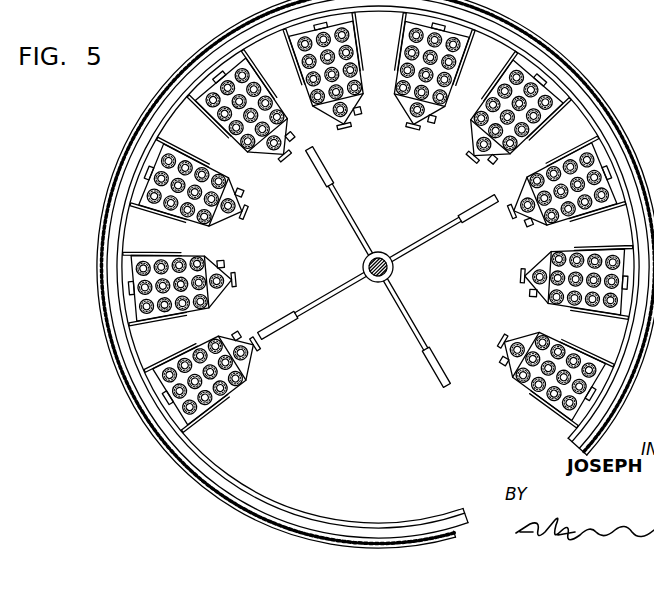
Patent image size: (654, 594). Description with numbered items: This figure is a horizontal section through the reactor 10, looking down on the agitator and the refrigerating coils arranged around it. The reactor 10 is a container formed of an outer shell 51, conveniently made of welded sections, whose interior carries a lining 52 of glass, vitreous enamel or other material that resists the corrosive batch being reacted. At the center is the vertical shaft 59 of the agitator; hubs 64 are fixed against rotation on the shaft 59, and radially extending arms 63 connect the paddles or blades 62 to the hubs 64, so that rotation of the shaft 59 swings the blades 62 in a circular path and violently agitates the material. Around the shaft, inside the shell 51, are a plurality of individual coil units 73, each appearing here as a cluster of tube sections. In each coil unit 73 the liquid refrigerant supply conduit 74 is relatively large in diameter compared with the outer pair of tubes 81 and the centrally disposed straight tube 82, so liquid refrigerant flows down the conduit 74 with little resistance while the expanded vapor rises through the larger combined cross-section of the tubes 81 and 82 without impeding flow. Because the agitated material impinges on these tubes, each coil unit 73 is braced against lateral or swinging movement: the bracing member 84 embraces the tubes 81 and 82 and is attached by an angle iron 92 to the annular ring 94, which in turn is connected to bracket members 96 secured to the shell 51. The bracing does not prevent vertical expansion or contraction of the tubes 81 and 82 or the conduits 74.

The reactor 10 is at (354, 274).
The outer shell 51 is at (97, 275).
The lining 52 is at (108, 337).
The vertical shaft 59 is at (369, 285).
The paddles or blades 62 is at (375, 264).
The radially extending arms 63 is at (378, 267).
The hub 64 is at (382, 248).
The coil unit 73 is at (374, 274).
The liquid refrigerant supply conduit 74 is at (377, 236).
The outer pair of tubes 81 is at (377, 221).
The centrally disposed straight tube 82 is at (378, 222).
The bracing member 84 is at (377, 237).
The angle iron 92 is at (378, 222).
The annular ring 94 is at (160, 117).
The bracket member 96 is at (125, 150).